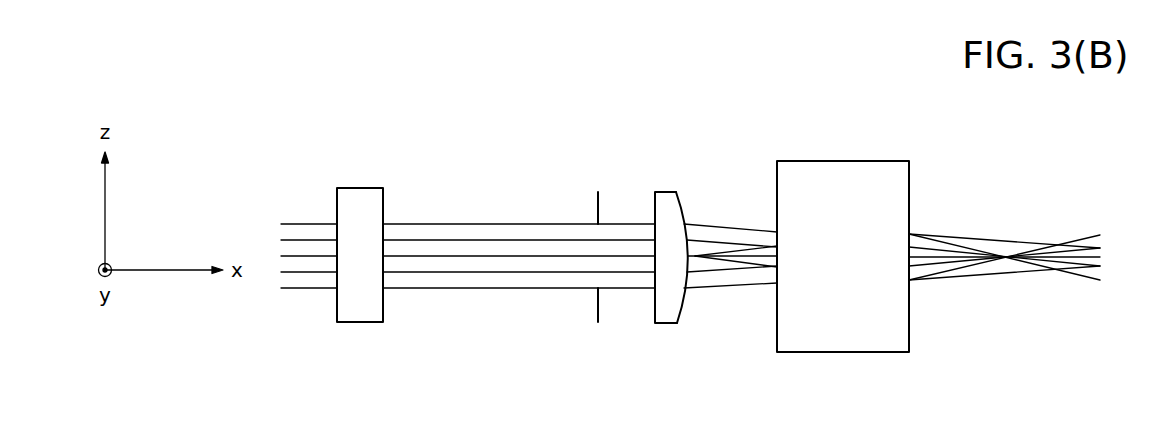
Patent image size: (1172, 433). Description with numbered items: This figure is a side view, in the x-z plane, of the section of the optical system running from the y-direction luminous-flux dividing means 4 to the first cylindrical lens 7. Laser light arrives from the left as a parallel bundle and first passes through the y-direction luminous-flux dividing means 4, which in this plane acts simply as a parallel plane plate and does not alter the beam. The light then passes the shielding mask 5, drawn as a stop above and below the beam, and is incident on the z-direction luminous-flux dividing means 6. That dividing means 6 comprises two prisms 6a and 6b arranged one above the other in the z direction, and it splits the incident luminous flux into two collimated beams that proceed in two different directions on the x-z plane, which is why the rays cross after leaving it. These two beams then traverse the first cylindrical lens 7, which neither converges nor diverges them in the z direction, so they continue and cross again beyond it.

The y-direction luminous-flux dividing means 4 is at (356, 198).
The shielding mask 5 is at (595, 197).
The z-direction luminous-flux dividing means 6 is at (667, 188).
The prism 6a is at (663, 205).
The prism 6b is at (669, 268).
The first cylindrical lens 7 is at (859, 177).